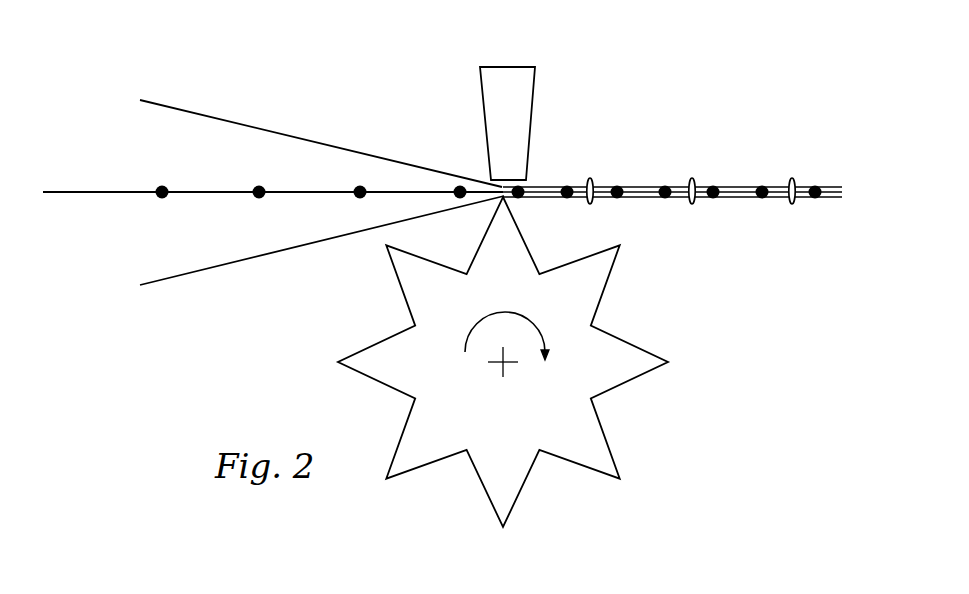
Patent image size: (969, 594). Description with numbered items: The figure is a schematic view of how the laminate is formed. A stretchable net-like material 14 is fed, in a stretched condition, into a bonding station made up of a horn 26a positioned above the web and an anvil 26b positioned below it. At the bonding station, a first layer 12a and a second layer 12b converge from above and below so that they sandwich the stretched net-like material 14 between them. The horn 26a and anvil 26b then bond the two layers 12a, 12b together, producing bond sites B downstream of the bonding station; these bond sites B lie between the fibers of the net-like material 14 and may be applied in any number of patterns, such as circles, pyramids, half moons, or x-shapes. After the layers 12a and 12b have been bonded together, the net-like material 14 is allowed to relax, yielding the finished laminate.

The layer 12a is at (258, 123).
The layer 12b is at (170, 280).
The stretchable net-like material 14 is at (143, 200).
The horn 26a is at (534, 130).
The anvil 26b is at (518, 222).
The bond sites B is at (787, 180).